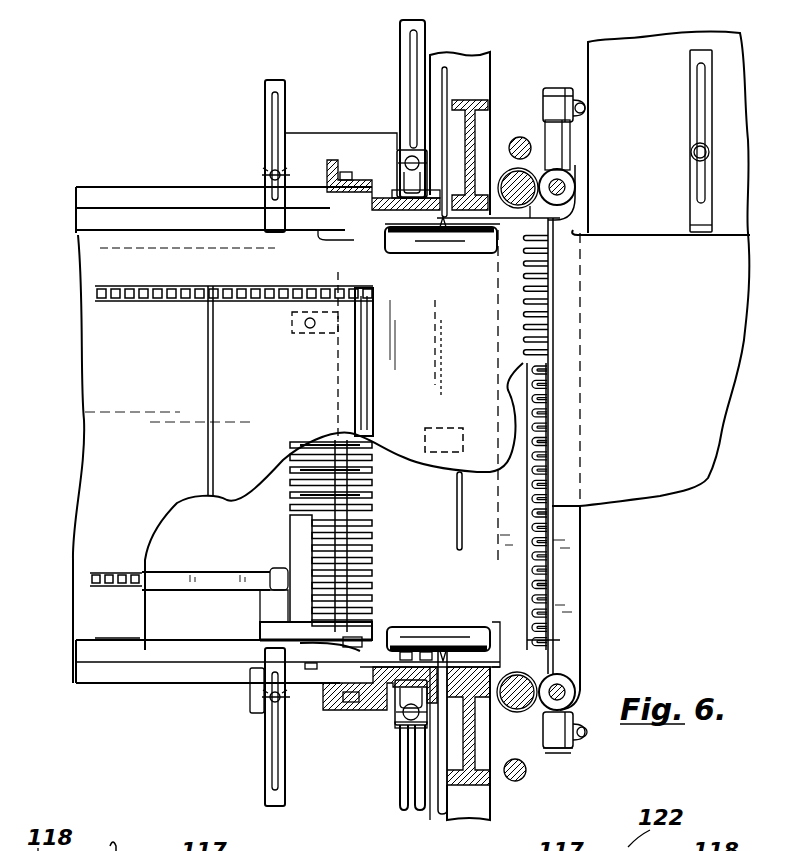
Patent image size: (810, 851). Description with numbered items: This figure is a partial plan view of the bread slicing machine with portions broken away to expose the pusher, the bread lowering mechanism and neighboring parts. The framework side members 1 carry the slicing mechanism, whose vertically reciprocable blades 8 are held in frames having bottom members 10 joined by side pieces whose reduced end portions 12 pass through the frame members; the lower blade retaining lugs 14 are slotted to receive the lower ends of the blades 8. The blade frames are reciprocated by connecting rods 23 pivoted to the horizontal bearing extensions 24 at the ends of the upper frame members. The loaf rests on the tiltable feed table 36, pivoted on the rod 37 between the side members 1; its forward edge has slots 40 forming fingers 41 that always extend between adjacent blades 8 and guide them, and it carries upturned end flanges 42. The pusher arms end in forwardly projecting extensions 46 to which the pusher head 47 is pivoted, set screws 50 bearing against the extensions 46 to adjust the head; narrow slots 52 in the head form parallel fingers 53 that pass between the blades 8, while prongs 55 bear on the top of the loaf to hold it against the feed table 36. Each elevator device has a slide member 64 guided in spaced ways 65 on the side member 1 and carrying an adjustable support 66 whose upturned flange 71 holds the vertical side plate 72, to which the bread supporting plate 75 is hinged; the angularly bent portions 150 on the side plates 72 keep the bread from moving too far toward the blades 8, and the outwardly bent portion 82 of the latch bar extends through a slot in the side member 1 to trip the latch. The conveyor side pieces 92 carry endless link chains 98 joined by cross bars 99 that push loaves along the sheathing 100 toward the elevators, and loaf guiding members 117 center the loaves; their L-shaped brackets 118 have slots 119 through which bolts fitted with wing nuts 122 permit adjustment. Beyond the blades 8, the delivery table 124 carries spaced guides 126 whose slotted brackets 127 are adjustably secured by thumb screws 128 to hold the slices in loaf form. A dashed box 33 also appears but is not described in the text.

The side members 1 is at (483, 80).
The blades 8 is at (548, 543).
The bottom members 10 is at (573, 599).
The end portions 12 is at (564, 184).
The blade retaining lugs 14 is at (543, 566).
The connecting rods 23 is at (522, 137).
The bearing extensions 24 is at (568, 150).
The switch 33 is at (452, 425).
The feed table 36 is at (395, 374).
The rod 37 is at (460, 550).
The slots 40 is at (548, 338).
The fingers 41 is at (533, 288).
The end flanges 42 is at (353, 356).
The extensions 46 is at (180, 572).
The pusher head 47 is at (290, 528).
The set screws 50 is at (280, 600).
The slots 52 is at (370, 568).
The fingers 53 is at (370, 526).
The prongs 55 is at (372, 485).
The slide member 64 is at (400, 708).
The ways 65 is at (398, 150).
The support 66 is at (402, 88).
The flange 71 is at (413, 632).
The side plate 72 is at (472, 248).
The bread supporting plate 75 is at (410, 245).
The outwardly bent portion 82 is at (445, 804).
The conveyor side pieces 92 is at (120, 188).
The link chain 98 is at (160, 301).
The cross bars 99 is at (209, 380).
The sheathing 100 is at (120, 490).
The loaf guiding members 117 is at (135, 238).
The L-shaped brackets 118 is at (268, 109).
The slots 119 is at (268, 88).
The wing nuts 122 is at (258, 178).
The delivery table 124 is at (668, 367).
The guides 126 is at (670, 236).
The slotted brackets 127 is at (690, 102).
The thumb screws 128 is at (698, 155).
The angularly bent portions 150 is at (547, 635).